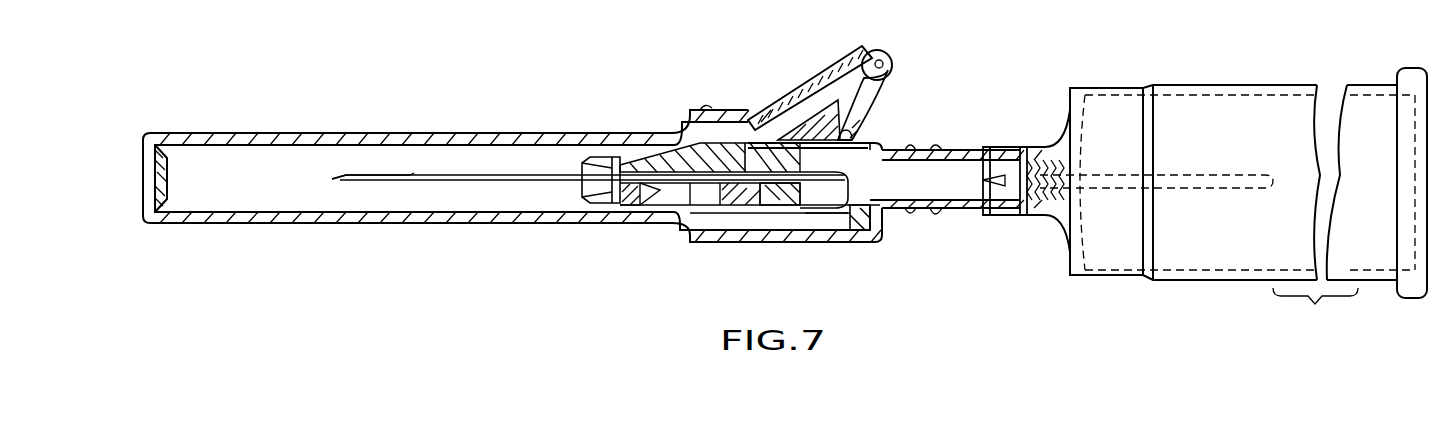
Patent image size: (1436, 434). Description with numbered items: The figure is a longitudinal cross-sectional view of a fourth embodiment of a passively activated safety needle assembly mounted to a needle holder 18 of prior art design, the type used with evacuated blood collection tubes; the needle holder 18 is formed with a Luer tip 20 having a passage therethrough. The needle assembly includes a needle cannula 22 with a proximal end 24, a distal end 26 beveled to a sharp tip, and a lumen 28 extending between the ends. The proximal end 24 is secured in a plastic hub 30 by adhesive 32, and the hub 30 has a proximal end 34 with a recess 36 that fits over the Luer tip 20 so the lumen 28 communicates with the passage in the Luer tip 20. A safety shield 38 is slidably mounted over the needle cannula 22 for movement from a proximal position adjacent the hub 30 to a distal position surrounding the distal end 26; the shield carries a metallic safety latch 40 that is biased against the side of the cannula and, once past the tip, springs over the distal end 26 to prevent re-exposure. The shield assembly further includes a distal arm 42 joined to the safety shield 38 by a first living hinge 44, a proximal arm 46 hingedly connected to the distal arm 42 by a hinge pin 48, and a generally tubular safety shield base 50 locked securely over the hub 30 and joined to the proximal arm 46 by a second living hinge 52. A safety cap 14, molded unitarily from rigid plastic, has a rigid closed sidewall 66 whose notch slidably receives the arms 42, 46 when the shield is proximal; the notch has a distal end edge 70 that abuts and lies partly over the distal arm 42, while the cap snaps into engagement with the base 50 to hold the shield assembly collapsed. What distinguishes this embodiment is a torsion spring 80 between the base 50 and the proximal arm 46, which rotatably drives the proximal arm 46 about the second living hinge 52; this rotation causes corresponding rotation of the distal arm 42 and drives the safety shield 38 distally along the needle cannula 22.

The safety cap 14 is at (356, 132).
The rigid closed sidewall 66 is at (276, 135).
The needle cannula 22 is at (470, 174).
The distal end 26 is at (338, 180).
The lumen 28 is at (412, 176).
The safety shield 38 is at (588, 204).
The safety latch 40 is at (616, 206).
The second living hinge 52 is at (745, 150).
The distal end edge 70 is at (742, 140).
The safety shield base 50 is at (740, 215).
The adhesive 32 is at (756, 210).
The proximal end 24 is at (830, 225).
The distal arm 42 is at (822, 84).
The hinge pin 48 is at (893, 67).
The proximal arm 46 is at (832, 112).
The torsion spring 80 is at (846, 130).
The first living hinge 44 is at (705, 110).
The hub 30 is at (906, 145).
The recess 36 is at (910, 210).
The proximal end 34 is at (936, 212).
The Luer tip 20 is at (968, 150).
The needle holder 18 is at (1210, 86).